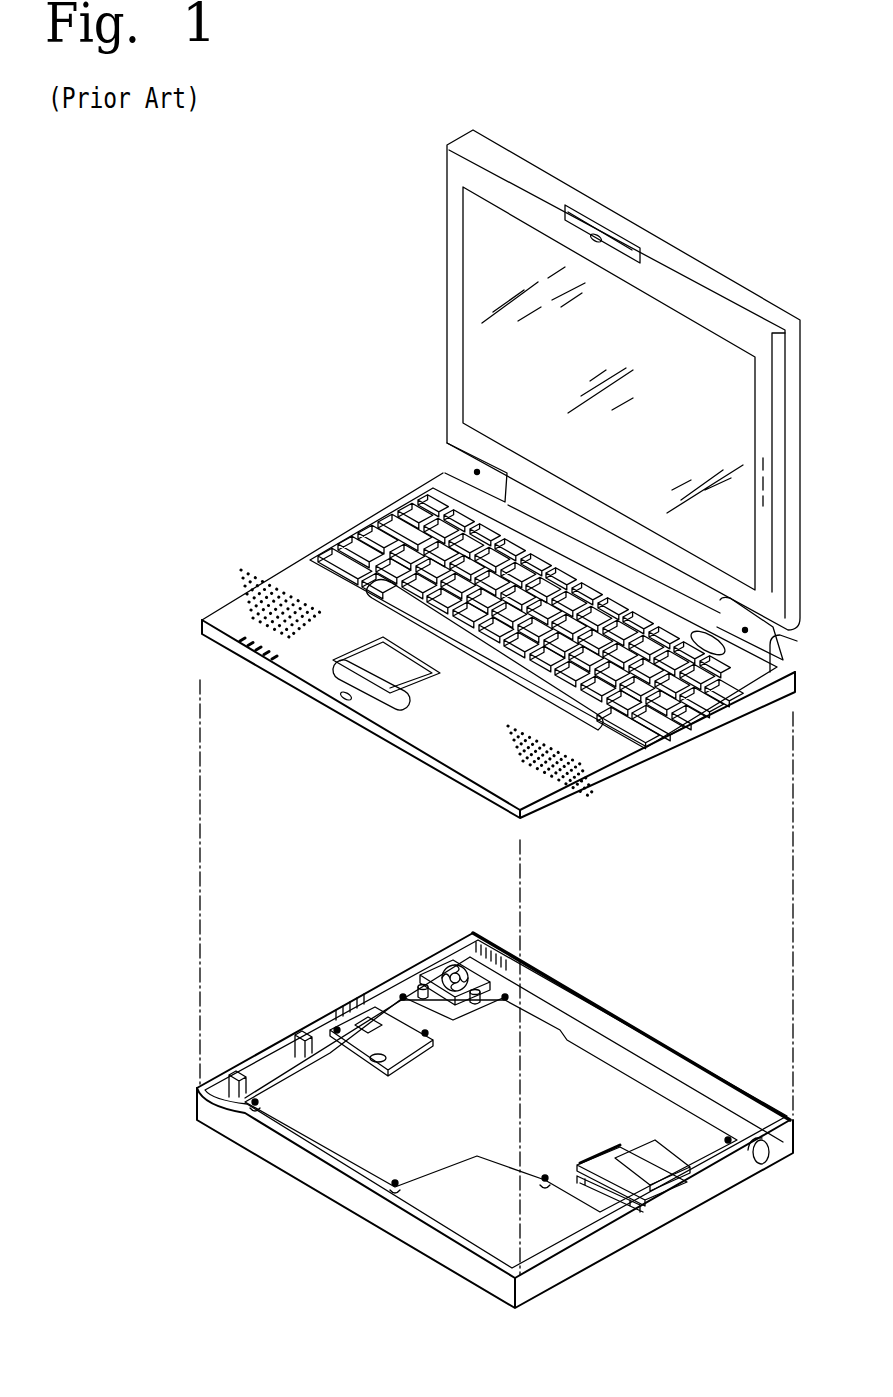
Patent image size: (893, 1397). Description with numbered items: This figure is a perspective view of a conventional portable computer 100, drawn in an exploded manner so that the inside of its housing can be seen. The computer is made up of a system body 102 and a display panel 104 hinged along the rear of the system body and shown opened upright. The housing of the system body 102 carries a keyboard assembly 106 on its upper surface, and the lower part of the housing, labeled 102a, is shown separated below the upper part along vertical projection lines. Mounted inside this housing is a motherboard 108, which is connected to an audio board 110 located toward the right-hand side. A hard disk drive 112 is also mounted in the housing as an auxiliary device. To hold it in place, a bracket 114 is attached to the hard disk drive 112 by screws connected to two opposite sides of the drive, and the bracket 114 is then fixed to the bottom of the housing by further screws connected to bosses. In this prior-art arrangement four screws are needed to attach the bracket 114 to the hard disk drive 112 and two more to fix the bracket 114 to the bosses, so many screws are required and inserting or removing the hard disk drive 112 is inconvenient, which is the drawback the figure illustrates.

The portable computer 100 is at (224, 287).
The system body 102 is at (263, 569).
The lower case of main body 102a is at (407, 1232).
The display panel 104 is at (436, 312).
The keyboard assembly 106 is at (372, 529).
The motherboard 108 is at (357, 1147).
The audio board 110 is at (680, 1167).
The hard disk drive 112 is at (592, 1156).
The bracket 114 is at (615, 1186).